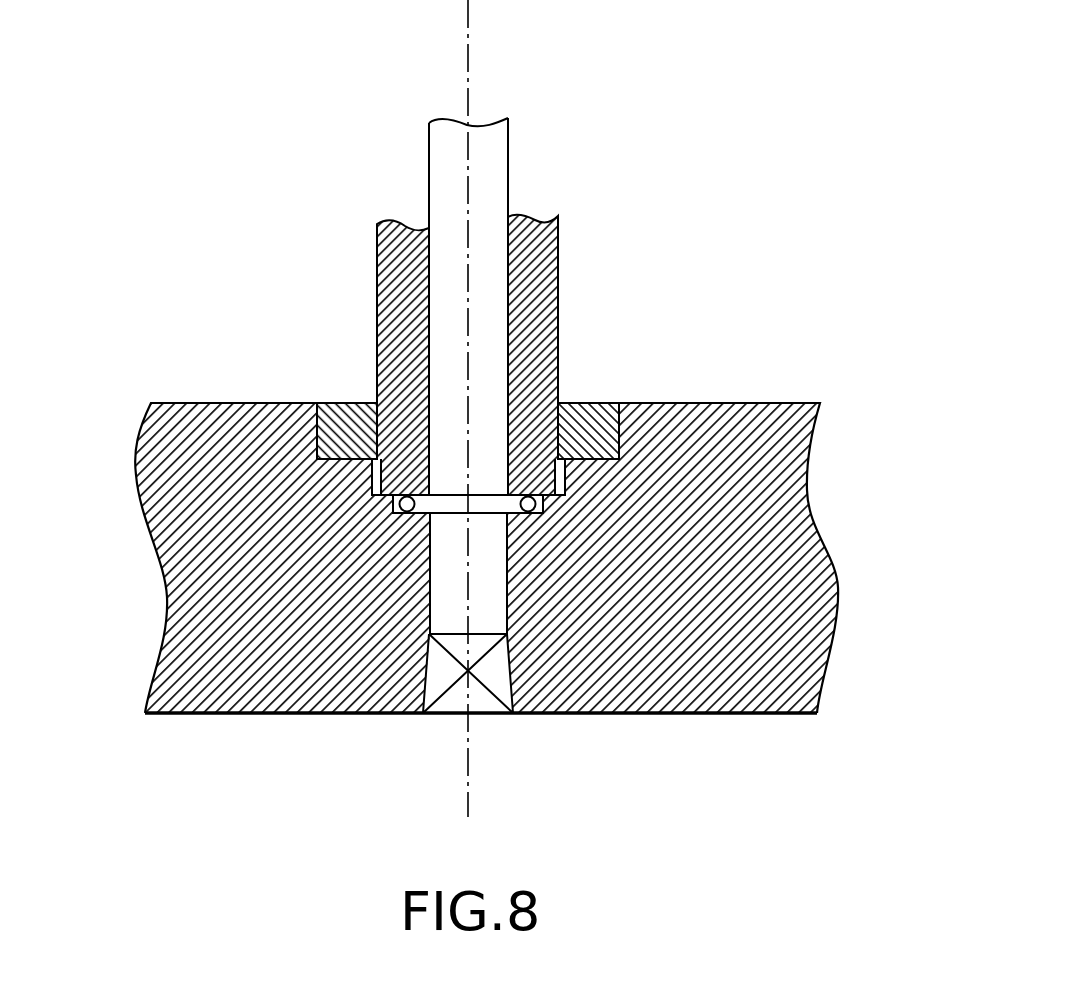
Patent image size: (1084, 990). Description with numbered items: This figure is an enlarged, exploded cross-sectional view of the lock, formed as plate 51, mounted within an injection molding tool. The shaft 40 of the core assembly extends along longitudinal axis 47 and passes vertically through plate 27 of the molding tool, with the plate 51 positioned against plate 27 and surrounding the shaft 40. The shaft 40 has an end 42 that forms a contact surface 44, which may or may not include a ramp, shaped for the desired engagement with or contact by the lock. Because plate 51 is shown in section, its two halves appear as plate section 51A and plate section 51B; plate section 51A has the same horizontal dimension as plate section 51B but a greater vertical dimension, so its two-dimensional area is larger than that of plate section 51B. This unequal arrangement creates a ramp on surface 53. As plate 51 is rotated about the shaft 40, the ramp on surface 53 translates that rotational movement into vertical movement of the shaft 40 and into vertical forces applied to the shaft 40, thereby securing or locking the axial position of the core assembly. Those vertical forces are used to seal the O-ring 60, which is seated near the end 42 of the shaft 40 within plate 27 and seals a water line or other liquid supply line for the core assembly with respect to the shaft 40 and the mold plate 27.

The plate 27 is at (757, 557).
The shaft 40 is at (560, 307).
The end 42 is at (513, 513).
The contact surface 44 is at (363, 497).
The longitudinal axis 47 is at (467, 23).
The plate 51 is at (487, 373).
The plate section 51A is at (352, 427).
The plate section 51B is at (587, 430).
The surface 53 is at (318, 446).
The O-ring 60 is at (408, 512).